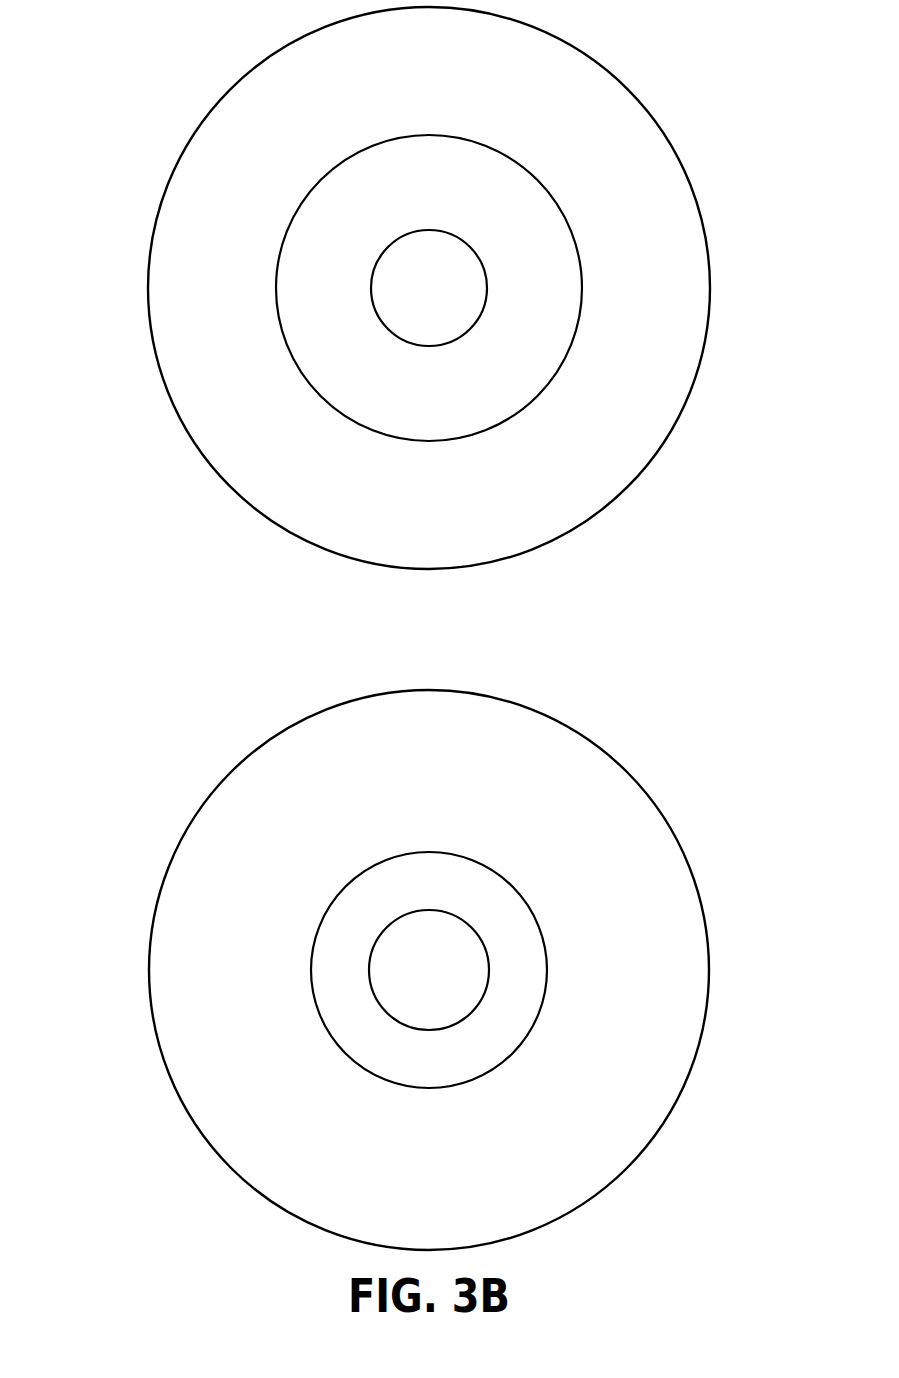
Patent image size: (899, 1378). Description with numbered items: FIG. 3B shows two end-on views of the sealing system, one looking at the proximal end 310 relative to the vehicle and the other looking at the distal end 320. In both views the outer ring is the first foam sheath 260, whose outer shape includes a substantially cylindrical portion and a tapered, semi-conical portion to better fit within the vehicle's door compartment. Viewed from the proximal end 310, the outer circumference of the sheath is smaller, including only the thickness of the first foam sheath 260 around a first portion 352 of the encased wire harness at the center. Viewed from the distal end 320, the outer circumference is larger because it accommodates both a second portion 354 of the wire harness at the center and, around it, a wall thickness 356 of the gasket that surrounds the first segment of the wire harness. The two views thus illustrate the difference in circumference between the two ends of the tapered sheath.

The proximal end 310 is at (733, 210).
The first foam sheath 260 is at (150, 278).
The first portion of the encased wire harness 352 is at (404, 274).
The distal end 320 is at (124, 810).
The wall thickness of the gasket 356 is at (348, 1008).
The second portion of the wire harness 354 is at (453, 985).